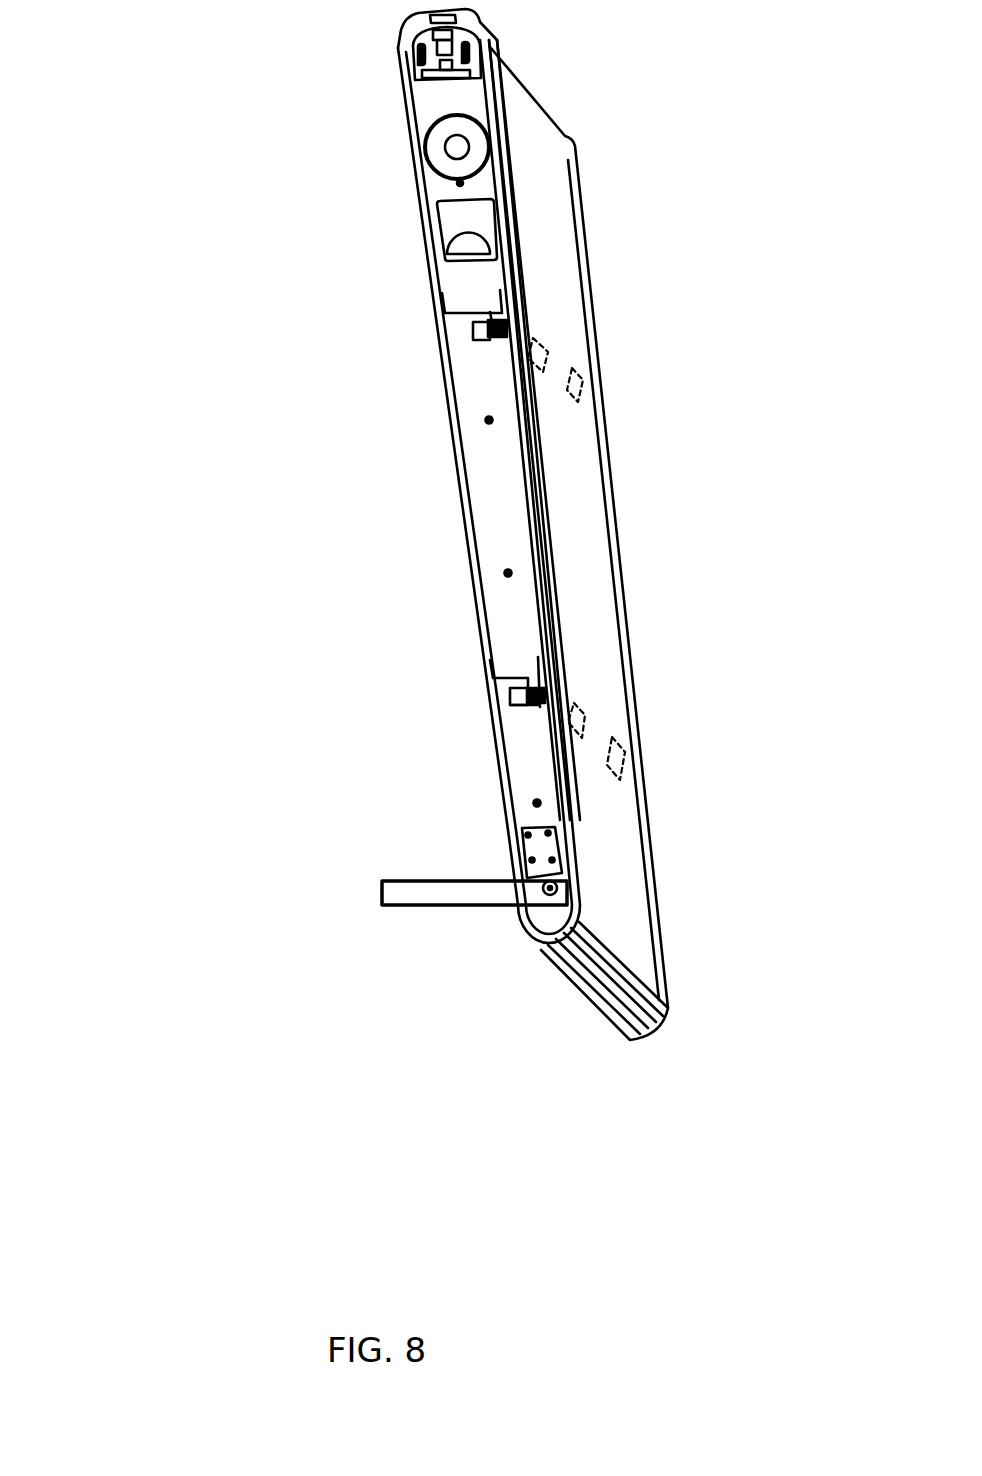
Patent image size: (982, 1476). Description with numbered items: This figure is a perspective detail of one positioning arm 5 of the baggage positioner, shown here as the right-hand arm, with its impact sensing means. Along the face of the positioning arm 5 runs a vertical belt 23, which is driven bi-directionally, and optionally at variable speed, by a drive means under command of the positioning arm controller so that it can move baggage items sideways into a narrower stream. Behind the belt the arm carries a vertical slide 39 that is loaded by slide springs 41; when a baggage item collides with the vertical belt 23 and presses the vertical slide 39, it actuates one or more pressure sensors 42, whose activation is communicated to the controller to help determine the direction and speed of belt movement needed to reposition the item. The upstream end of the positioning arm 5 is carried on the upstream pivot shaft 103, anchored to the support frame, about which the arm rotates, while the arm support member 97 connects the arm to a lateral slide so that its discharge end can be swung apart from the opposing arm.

The positioning arm 5 is at (420, 237).
The vertical belt 23 is at (568, 318).
The vertical slide 39 is at (527, 420).
The slide springs 41 is at (528, 687).
The pressure sensors 42 is at (507, 703).
The arm support member 97 is at (498, 913).
The upstream pivot shaft 103 is at (443, 149).